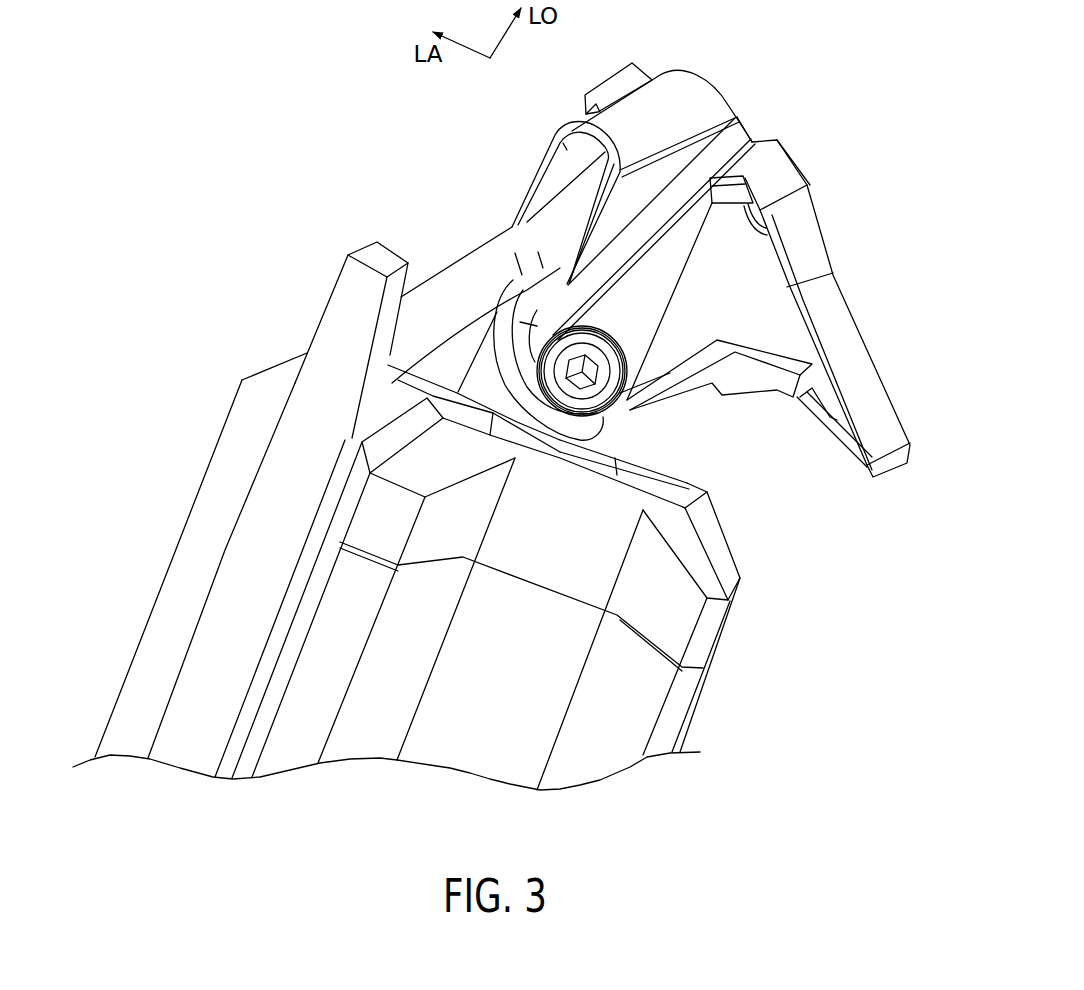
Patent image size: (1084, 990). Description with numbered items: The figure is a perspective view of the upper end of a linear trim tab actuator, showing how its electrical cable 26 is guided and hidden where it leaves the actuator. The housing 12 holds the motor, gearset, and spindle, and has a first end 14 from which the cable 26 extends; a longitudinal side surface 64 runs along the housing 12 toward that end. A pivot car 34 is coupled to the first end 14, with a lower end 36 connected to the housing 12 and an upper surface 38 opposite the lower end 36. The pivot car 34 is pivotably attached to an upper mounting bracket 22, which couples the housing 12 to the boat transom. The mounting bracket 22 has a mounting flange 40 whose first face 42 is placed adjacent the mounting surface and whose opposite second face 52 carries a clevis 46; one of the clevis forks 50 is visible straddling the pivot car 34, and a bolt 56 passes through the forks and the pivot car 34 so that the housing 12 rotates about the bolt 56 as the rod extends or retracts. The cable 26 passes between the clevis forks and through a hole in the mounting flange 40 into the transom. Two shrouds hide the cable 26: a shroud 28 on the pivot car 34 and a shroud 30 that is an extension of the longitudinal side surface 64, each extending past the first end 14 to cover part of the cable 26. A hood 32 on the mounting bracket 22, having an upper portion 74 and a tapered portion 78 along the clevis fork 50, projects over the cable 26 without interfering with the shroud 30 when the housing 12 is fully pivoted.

The housing 12 is at (420, 571).
The first end 14 is at (690, 470).
The upper mounting bracket 22 is at (835, 308).
The cable 26 is at (480, 247).
The shroud 28 is at (462, 322).
The shroud 30 is at (328, 272).
The hood 32 is at (696, 70).
The pivot car 34 is at (672, 408).
The lower end 36 is at (420, 389).
The upper surface 38 is at (387, 362).
The mounting flange 40 is at (873, 406).
The first face 42 is at (826, 241).
The clevis 46 is at (746, 261).
The clevis fork 50 is at (727, 311).
The second face 52 is at (827, 415).
The bolt 56 is at (581, 398).
The longitudinal side surface 64 is at (195, 608).
The upper portion 74 is at (666, 139).
The tapered portion 78 is at (679, 150).